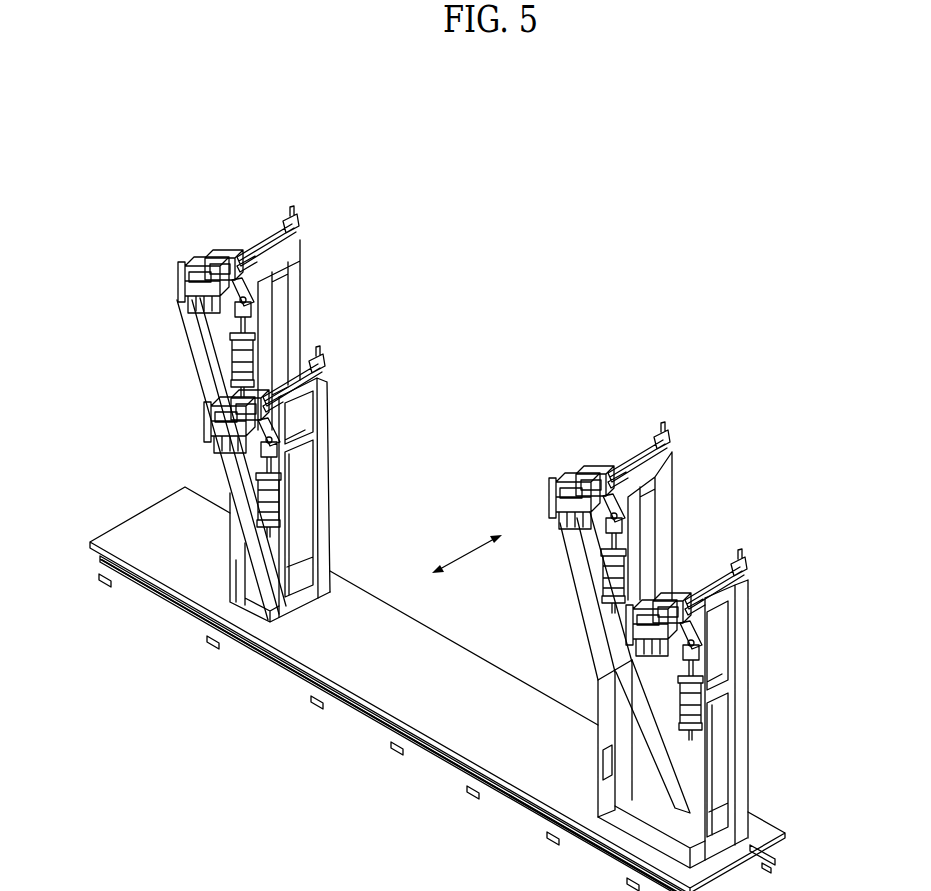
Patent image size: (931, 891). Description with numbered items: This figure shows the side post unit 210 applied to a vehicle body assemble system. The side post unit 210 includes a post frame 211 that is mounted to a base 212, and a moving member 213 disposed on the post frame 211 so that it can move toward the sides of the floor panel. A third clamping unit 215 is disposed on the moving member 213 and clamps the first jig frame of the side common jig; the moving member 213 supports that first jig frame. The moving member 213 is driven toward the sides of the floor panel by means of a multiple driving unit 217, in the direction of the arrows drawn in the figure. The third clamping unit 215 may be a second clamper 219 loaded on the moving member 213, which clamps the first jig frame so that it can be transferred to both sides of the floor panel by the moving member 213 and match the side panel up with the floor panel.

The side post unit 210 is at (500, 137).
The post frame 211 is at (340, 478).
The base 212 is at (377, 673).
The moving member 213 is at (183, 282).
The third clamping unit 215 is at (224, 244).
The multiple driving unit 217 is at (266, 240).
The second clamper 219 is at (217, 245).